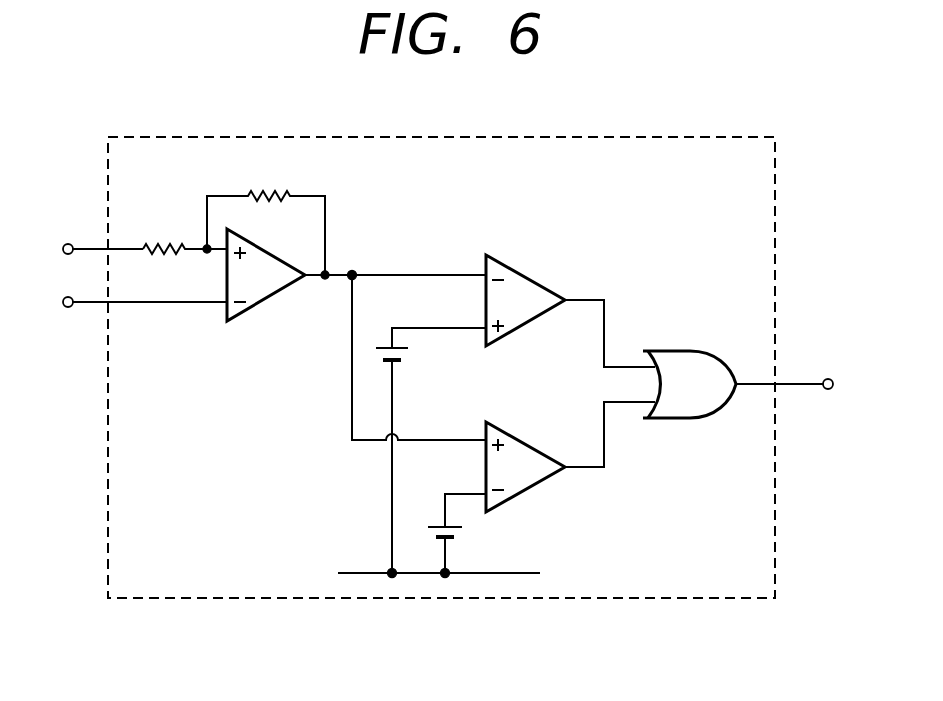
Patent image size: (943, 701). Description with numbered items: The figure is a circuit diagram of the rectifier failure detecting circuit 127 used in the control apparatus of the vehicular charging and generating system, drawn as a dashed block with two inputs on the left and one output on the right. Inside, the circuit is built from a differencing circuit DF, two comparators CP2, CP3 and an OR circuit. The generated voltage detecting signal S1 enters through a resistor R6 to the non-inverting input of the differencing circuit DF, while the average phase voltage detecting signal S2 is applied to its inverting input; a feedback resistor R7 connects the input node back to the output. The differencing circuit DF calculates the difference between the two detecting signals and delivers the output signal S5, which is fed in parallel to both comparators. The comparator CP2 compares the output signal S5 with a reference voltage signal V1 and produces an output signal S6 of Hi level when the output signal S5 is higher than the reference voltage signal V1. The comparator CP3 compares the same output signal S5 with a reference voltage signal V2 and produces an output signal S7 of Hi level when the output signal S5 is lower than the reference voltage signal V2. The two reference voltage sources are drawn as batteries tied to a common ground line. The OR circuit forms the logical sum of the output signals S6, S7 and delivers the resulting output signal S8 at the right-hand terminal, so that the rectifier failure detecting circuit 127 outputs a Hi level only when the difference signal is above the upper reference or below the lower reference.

The generated voltage detecting signal S1 is at (82, 249).
The average phase voltage detecting signal S2 is at (124, 302).
The resistor R6 is at (175, 232).
The resistor R7 is at (264, 217).
The differencing circuit DF is at (270, 298).
The output signal S5 is at (403, 340).
The comparator CP3 is at (523, 282).
The comparator CP2 is at (533, 449).
The reference voltage signal V2 is at (431, 450).
The reference voltage signal V1 is at (463, 533).
The output signal S7 is at (604, 312).
The output signal S6 is at (604, 450).
The output signal S8 is at (805, 384).
The rectifier failure detecting circuit 127 is at (776, 551).